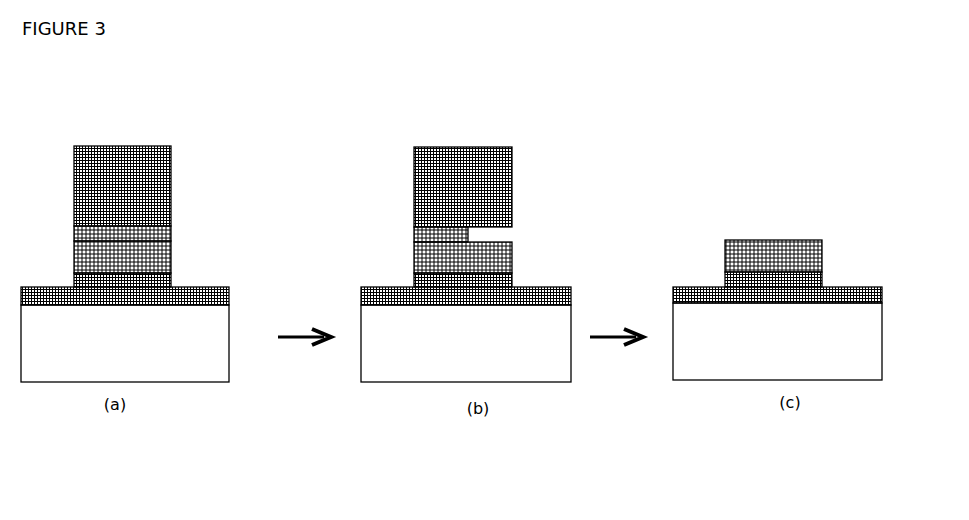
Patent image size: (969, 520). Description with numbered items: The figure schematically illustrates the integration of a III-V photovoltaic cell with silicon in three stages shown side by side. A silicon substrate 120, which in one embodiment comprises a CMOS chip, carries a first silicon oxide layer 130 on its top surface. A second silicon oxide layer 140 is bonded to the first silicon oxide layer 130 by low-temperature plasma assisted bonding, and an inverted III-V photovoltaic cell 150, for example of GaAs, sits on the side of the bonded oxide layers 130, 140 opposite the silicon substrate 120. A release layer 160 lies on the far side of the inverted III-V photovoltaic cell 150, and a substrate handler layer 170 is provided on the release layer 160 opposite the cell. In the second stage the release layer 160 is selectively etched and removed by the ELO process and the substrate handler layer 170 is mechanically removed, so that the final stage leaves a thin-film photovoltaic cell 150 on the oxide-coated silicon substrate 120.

The silicon substrate 120 is at (790, 453).
The first silicon oxide layer 130 is at (705, 291).
The second silicon oxide layer 140 is at (737, 277).
The inverted III-V photovoltaic cell 150 is at (744, 229).
The release layer 160 is at (171, 233).
The substrate handler layer 170 is at (175, 186).